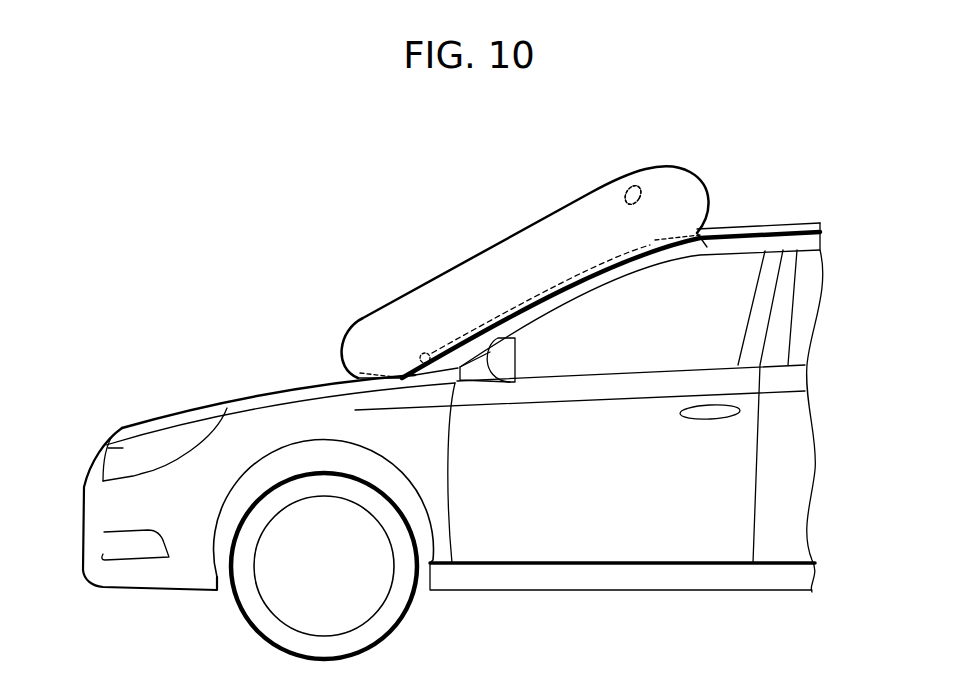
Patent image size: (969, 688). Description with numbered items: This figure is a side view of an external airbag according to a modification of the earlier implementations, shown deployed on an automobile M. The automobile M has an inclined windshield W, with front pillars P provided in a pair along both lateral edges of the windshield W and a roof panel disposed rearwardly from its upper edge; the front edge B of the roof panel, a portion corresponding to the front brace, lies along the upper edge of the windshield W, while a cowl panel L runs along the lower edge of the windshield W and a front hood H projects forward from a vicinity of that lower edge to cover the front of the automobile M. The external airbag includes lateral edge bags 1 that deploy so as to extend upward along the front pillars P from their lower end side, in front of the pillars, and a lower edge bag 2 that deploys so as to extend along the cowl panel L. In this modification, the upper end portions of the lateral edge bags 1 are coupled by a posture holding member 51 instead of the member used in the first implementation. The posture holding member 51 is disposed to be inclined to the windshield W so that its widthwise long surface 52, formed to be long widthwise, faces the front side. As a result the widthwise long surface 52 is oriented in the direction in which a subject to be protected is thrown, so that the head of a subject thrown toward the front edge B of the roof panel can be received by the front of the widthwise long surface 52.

The lateral edge bag 1 is at (497, 244).
The lower edge bag 2 is at (426, 360).
The cowl panel L is at (430, 356).
The windshield W is at (592, 262).
The front pillar P is at (643, 260).
The widthwise long surface 52 is at (627, 192).
The posture holding member 51 is at (637, 187).
The front edge of the roof panel B is at (667, 232).
The automobile M is at (792, 225).
The front hood H is at (243, 397).